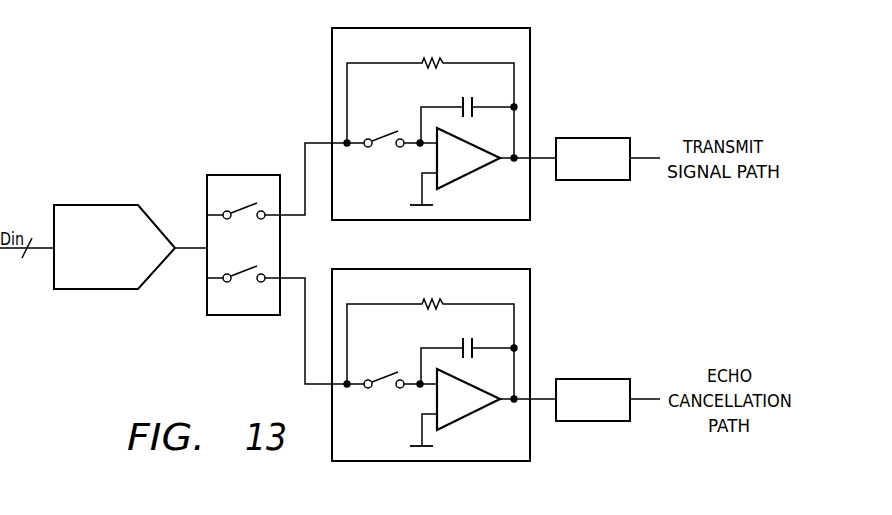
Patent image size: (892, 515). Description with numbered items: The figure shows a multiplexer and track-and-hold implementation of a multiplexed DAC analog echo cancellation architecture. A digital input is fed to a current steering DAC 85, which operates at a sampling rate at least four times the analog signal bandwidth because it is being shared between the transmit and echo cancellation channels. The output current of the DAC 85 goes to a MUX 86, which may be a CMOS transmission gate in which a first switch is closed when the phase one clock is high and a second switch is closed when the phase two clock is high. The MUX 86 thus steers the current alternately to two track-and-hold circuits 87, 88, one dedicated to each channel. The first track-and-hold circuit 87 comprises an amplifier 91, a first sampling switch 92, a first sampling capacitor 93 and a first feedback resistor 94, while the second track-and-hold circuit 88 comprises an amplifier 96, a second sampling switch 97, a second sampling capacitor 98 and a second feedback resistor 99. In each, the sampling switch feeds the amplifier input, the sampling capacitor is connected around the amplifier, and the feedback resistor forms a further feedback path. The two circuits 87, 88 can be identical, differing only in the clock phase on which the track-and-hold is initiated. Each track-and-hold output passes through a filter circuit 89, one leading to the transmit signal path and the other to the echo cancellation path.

The current steering DAC 85 is at (96, 205).
The MUX 86 is at (242, 175).
The track-and-hold circuit 87 is at (531, 52).
The track-and-hold circuit 88 is at (531, 293).
The filter circuit 89 is at (595, 138).
The amplifier 91 is at (468, 176).
The sampling switch S1 92 is at (363, 148).
The sampling capacitor C1 93 is at (421, 118).
The feedback resistor R1 94 is at (445, 63).
The amplifier 96 is at (468, 417).
The sampling switch S2 97 is at (363, 389).
The sampling capacitor C2 98 is at (421, 359).
The feedback resistor R2 99 is at (445, 304).